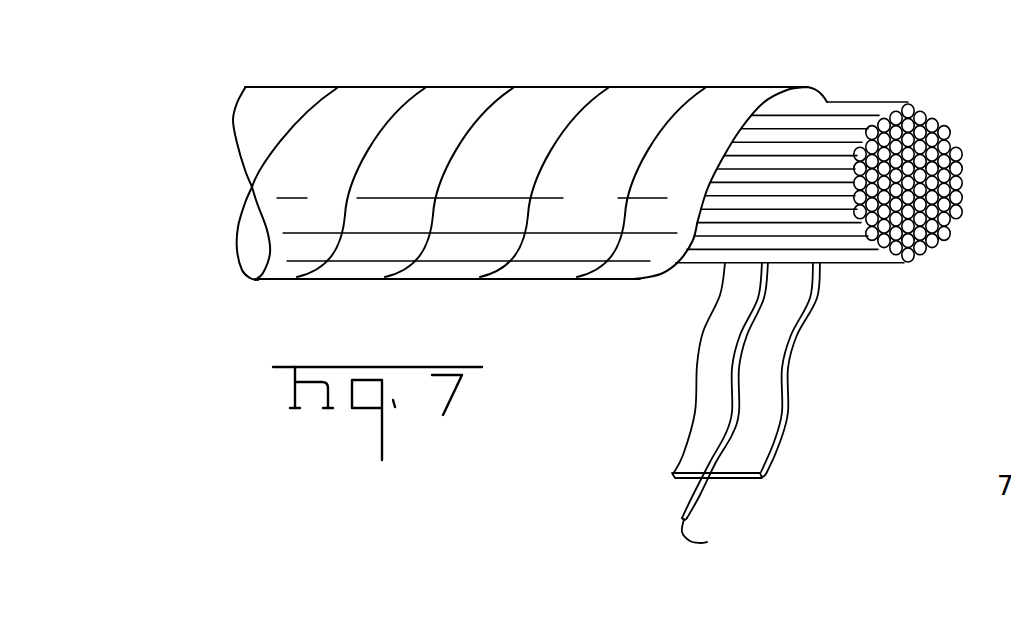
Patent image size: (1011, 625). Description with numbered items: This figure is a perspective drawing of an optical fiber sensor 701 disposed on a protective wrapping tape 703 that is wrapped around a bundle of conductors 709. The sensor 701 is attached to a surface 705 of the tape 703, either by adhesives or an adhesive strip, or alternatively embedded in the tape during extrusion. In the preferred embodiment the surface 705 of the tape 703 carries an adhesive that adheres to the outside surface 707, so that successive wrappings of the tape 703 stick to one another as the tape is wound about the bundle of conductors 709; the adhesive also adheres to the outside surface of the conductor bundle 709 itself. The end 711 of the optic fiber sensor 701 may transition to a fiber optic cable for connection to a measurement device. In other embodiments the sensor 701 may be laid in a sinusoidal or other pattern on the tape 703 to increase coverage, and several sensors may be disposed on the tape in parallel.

The outside surface 707 is at (743, 100).
The bundle of conductors 709 is at (897, 100).
The surface of tape 705 is at (767, 418).
The protective wrapping tape 703 is at (800, 348).
The optical fiber sensor 701 is at (707, 486).
The end of optic fiber sensor 711 is at (707, 542).